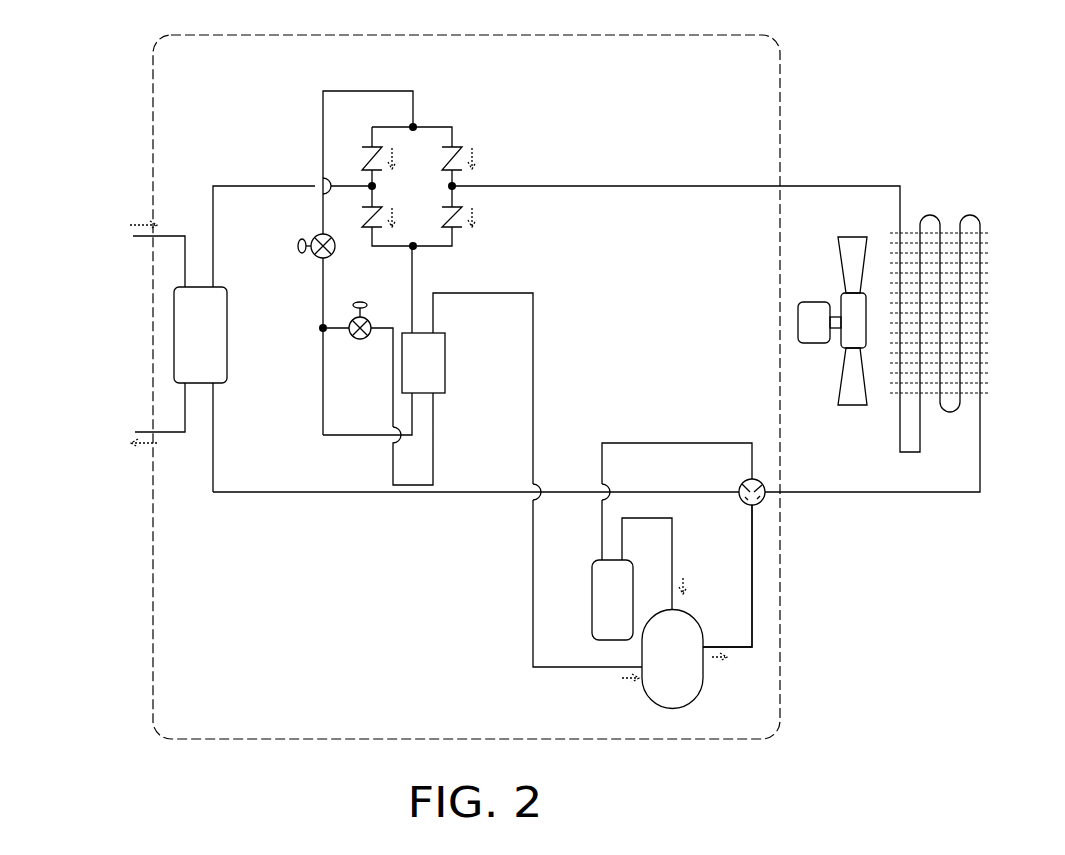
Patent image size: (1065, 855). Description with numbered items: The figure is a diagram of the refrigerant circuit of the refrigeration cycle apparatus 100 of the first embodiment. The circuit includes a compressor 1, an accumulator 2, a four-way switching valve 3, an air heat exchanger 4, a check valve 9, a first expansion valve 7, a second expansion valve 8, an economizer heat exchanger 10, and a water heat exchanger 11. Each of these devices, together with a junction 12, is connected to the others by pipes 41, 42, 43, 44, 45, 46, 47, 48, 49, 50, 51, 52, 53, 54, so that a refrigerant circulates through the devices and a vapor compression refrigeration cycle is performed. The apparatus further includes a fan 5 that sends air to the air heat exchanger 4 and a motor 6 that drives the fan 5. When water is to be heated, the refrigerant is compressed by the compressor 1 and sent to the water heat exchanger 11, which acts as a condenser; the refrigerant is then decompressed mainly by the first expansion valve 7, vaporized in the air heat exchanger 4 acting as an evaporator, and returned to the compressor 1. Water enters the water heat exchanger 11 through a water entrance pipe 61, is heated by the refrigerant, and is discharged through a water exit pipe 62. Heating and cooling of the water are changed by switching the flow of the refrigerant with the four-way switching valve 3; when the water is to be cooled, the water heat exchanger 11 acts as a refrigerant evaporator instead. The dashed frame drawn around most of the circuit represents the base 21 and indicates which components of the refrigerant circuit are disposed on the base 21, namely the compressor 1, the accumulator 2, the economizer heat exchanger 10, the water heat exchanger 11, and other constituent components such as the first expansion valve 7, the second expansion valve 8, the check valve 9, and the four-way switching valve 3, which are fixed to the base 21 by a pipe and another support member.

The compressor 1 is at (688, 690).
The accumulator 2 is at (600, 597).
The four-way switching valve 3 is at (763, 502).
The air heat exchanger 4 is at (1001, 353).
The fan 5 is at (827, 275).
The motor 6 is at (796, 315).
The first expansion valve 7 is at (313, 237).
The second expansion valve 8 is at (370, 312).
The check valve 9 is at (498, 154).
The economizer heat exchanger 10 is at (445, 363).
The water heat exchanger 11 is at (185, 335).
The junction 12 is at (318, 336).
The base 21 is at (565, 33).
The pipe 41 is at (755, 617).
The pipe 42 is at (941, 493).
The pipe 43 is at (653, 185).
The pipe 44 is at (370, 90).
The pipe 45 is at (323, 288).
The pipe 46 is at (318, 408).
The pipe 47 is at (418, 262).
The pipe 48 is at (248, 185).
The pipe 49 is at (338, 493).
The pipe 50 is at (682, 443).
The pipe 51 is at (674, 528).
The pipe 52 is at (332, 333).
The pipe 53 is at (434, 452).
The pipe 54 is at (536, 318).
The water entrance pipe 61 is at (172, 225).
The water exit pipe 62 is at (169, 440).
The refrigeration cycle apparatus 100 is at (840, 117).